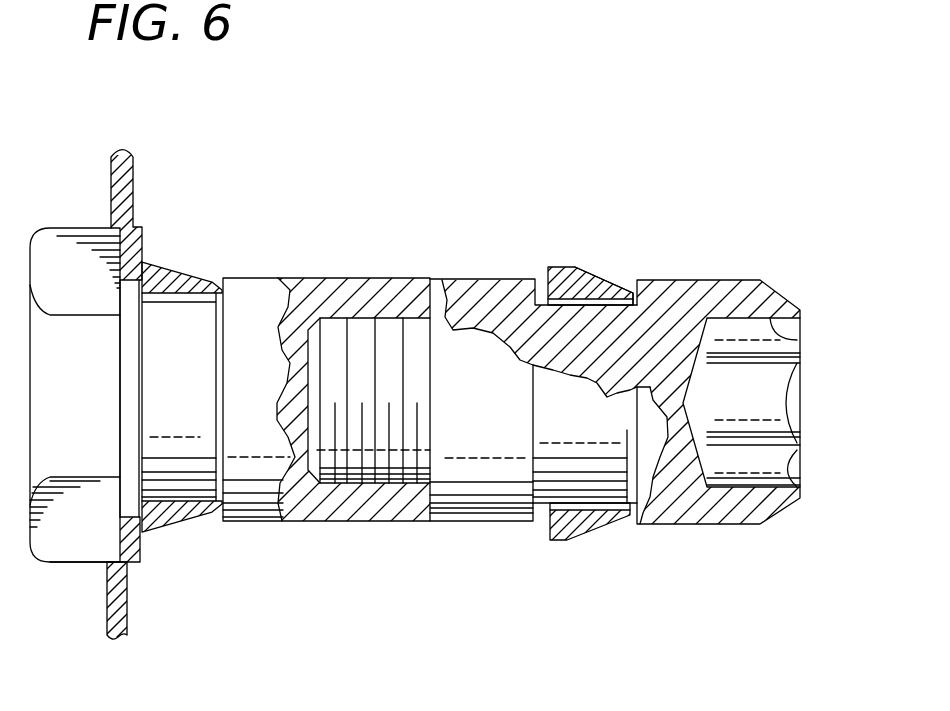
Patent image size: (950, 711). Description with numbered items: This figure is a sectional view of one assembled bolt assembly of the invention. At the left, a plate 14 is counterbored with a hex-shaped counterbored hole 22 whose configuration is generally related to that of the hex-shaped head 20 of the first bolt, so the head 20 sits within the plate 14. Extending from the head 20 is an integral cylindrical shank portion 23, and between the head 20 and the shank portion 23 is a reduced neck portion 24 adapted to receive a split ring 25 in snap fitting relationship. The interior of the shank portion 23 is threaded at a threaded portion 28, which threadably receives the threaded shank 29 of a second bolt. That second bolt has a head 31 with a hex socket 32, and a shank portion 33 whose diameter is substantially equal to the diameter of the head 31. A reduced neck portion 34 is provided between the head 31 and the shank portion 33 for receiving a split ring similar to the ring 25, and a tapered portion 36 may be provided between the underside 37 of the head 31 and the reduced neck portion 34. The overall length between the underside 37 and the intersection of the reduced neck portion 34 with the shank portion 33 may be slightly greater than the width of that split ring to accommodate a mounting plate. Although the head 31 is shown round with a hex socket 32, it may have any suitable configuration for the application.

The plate 14 is at (138, 195).
The hex-shaped head 20 is at (92, 227).
The hex-shaped counterbored hole 22 is at (115, 562).
The cylindrical shank portion 23 is at (315, 278).
The reduced neck portion 24 is at (210, 283).
The split ring 25 is at (185, 267).
The threaded portion 28 is at (345, 316).
The threaded shank 29 is at (362, 464).
The head 31 is at (685, 282).
The hex socket 32 is at (797, 340).
The shank portion 33 is at (497, 280).
The reduced neck portion 34 is at (543, 287).
The tapered portion 36 is at (610, 530).
The underside 37 is at (633, 286).